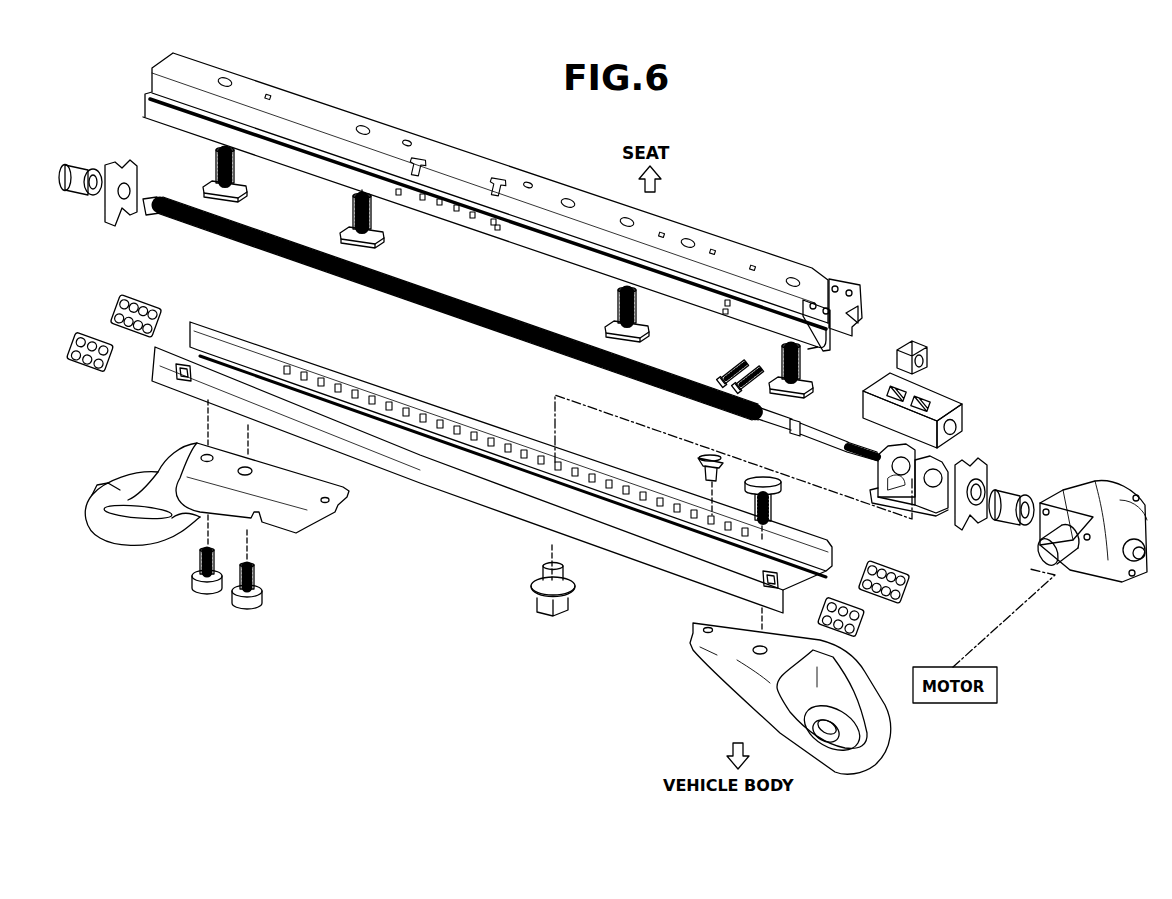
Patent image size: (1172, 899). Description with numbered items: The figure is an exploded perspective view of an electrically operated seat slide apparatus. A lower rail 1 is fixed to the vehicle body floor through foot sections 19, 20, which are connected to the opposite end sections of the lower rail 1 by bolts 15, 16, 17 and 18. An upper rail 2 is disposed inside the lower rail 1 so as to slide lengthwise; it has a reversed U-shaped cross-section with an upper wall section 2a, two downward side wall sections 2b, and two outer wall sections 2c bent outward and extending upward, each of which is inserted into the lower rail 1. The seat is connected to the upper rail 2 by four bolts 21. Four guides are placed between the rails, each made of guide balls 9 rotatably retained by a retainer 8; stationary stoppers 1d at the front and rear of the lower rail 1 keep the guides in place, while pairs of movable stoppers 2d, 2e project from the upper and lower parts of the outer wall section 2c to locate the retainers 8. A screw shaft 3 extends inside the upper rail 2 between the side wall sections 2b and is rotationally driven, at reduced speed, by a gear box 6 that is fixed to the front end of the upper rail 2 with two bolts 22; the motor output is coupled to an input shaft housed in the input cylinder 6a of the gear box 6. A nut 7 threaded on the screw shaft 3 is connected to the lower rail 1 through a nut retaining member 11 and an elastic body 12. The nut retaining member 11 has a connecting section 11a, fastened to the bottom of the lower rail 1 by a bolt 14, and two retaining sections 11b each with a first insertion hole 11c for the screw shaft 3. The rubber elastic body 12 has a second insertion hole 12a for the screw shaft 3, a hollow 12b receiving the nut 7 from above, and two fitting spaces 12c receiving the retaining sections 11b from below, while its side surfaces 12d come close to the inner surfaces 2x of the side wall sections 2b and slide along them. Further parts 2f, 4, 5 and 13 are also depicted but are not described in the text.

The lower rail 1 is at (480, 477).
The stationary stoppers 1d is at (178, 381).
The upper rail 2 is at (543, 204).
The upper wall section 2a is at (340, 118).
The side wall sections 2b is at (293, 132).
The outer wall sections 2c is at (335, 172).
The movable stopper 2d is at (492, 223).
The movable stopper 2e is at (498, 231).
The slots 2f is at (271, 96).
The inner surfaces 2x is at (845, 306).
The screw shaft 3 is at (527, 318).
The retainer plate 4 is at (546, 378).
The bushing 5 is at (82, 200).
The gear box 6 is at (1090, 580).
The input cylinder 6a is at (1090, 576).
The nut 7 is at (933, 336).
The retainer 8 is at (500, 468).
The guide balls 9 is at (138, 302).
The nut retaining member 11 is at (952, 497).
The connecting section 11a is at (890, 500).
The retaining sections 11b is at (880, 470).
The first insertion hole 11c is at (928, 512).
The elastic body 12 is at (938, 393).
The second insertion hole 12a is at (962, 425).
The hollow 12b is at (925, 392).
The fitting spaces 12c is at (872, 384).
The side surfaces 12d is at (907, 422).
The bearing assembly 13 is at (546, 396).
The bolt 14 is at (550, 622).
The bolt 15 is at (785, 490).
The bolt 16 is at (698, 460).
The bolt 17 is at (247, 610).
The bolt 18 is at (205, 595).
The foot section 19 is at (742, 694).
The foot section 20 is at (137, 537).
The bolts 21 is at (382, 243).
The bolts 22 is at (722, 360).